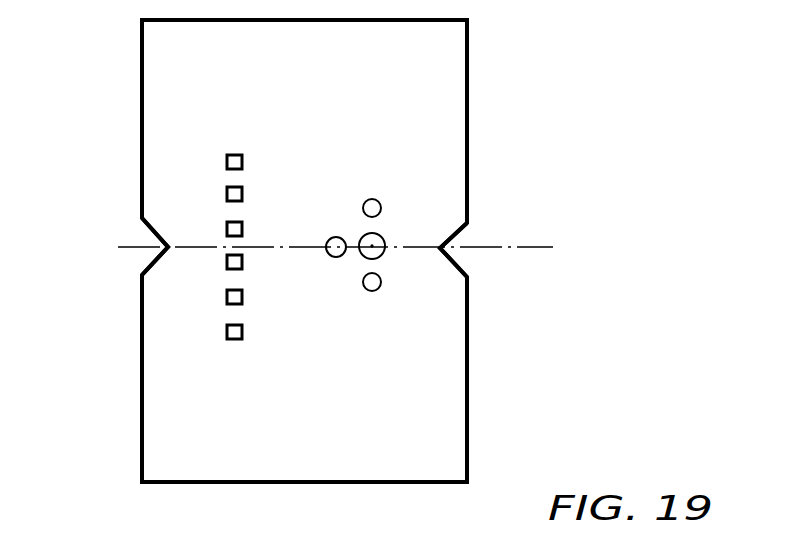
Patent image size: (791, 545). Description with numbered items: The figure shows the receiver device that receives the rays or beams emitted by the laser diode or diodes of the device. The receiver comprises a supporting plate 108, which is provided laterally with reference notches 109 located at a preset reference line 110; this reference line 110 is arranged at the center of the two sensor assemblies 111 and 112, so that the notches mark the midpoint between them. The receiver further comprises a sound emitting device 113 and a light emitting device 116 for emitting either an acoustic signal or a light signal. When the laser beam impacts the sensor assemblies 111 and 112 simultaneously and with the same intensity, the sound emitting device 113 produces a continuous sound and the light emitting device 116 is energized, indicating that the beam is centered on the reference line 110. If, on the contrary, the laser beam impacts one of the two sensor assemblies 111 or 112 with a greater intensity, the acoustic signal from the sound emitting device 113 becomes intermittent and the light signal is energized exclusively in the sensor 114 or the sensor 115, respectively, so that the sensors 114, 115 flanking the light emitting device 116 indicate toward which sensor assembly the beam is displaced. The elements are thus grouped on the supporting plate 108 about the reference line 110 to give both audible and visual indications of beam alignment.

The supporting plate 108 is at (469, 70).
The reference notches 109 is at (140, 247).
The reference line 110 is at (472, 257).
The sensor assembly 111 is at (242, 227).
The sensor assembly 112 is at (242, 262).
The sound emitting device 113 is at (335, 237).
The sensor 114 is at (377, 200).
The sensor 115 is at (375, 291).
The light emitting device 116 is at (384, 238).